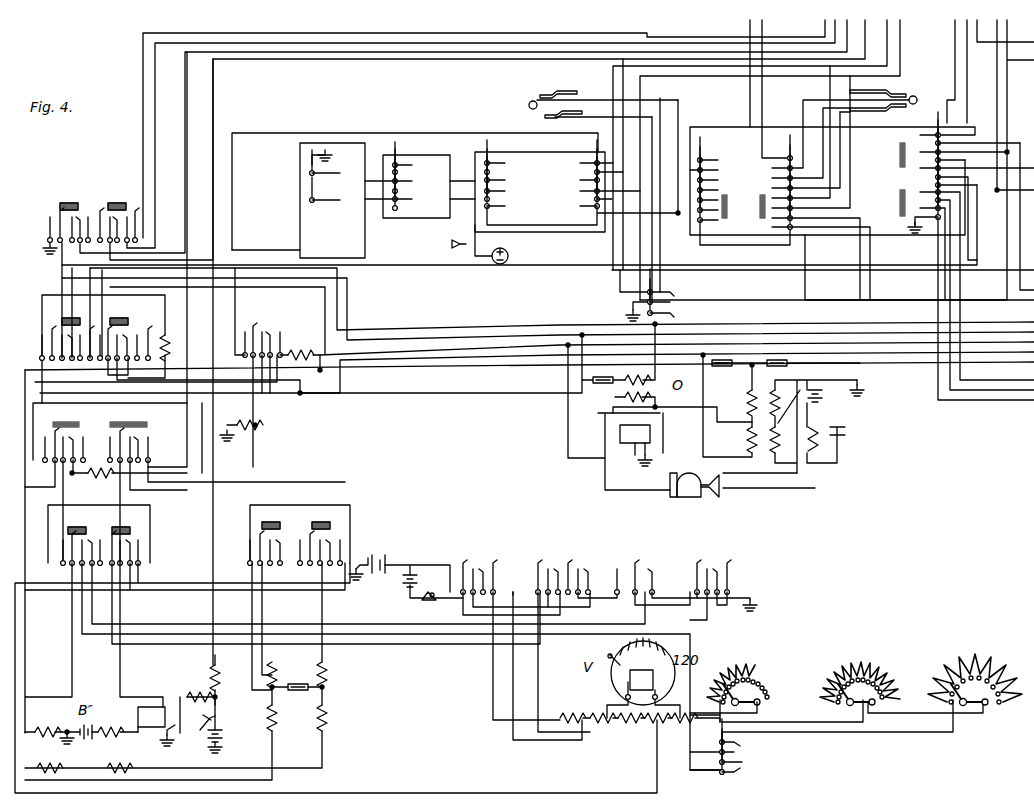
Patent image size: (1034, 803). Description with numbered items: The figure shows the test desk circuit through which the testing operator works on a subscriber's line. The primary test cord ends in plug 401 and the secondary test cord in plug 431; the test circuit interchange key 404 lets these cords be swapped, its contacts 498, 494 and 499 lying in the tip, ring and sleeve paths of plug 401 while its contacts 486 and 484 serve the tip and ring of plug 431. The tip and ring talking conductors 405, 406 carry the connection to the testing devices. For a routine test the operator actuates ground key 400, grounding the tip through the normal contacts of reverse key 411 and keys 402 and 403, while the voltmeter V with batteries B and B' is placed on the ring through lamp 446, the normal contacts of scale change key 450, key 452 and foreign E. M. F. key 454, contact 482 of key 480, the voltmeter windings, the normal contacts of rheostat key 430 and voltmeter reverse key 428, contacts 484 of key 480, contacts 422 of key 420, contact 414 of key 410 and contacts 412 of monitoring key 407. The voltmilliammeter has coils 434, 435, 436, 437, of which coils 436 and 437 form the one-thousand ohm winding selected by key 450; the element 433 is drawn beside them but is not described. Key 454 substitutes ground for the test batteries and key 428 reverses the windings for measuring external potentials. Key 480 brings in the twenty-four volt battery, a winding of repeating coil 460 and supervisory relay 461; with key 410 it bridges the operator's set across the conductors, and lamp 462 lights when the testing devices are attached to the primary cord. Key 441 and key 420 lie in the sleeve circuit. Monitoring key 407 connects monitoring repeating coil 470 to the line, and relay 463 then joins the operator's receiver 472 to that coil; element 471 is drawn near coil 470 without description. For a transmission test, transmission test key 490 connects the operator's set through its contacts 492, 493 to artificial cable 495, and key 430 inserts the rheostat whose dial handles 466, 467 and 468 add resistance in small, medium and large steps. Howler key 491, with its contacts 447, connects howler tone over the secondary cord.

The ground key 400 is at (332, 200).
The primary test plug 401 is at (542, 96).
The key 402 is at (577, 212).
The key 403 is at (549, 186).
The test circuit interchange key 404 is at (785, 151).
The tip conductor 405 is at (778, 73).
The ring conductor 406 is at (745, 78).
The monitoring key 407 is at (86, 192).
The key 410 is at (105, 334).
The reverse key 411 is at (420, 180).
The contacts of key 407 412 is at (114, 204).
The contact of key 410 414 is at (115, 310).
The key 420 is at (216, 492).
The contacts of key 420 422 is at (84, 428).
The voltmeter reverse key 428 is at (705, 550).
The rheostat key 430 is at (756, 762).
The secondary test plug 431 is at (910, 95).
The resistor 433 is at (569, 710).
The voltmilliammeter coil 434 is at (598, 723).
The voltmilliammeter coil 435 is at (627, 723).
The voltmilliammeter coil 436 is at (654, 722).
The voltmilliammeter coil 437 is at (683, 722).
The key 441 is at (255, 320).
The lamp 446 is at (406, 581).
The contacts of key 491 447 is at (900, 212).
The scale change key 450 is at (482, 550).
The key 452 is at (562, 550).
The foreign E. M. F. key 454 is at (635, 550).
The repeating coil 460 is at (52, 743).
The supervisory relay 461 is at (140, 712).
The lamp 462 is at (191, 707).
The relay 463 is at (635, 458).
The dial handle 466 is at (729, 688).
The dial handle 467 is at (901, 687).
The third dial handle 468 is at (975, 680).
The monitoring repeating coil 470 is at (620, 391).
The fuse 471 is at (586, 388).
The operator's receiver 472 is at (676, 472).
The key 480 is at (88, 530).
The contact of key 480 482 is at (72, 565).
The contacts 484 is at (120, 547).
The contacts of key 404 486 is at (778, 142).
The transmission test key 490 is at (293, 520).
The howler key 491 is at (898, 183).
The contacts of key 490 492 is at (287, 626).
The contacts of key 490 493 is at (312, 520).
The contacts of key 404 494 is at (720, 184).
The artificial cable 495 is at (176, 715).
The contacts of key 404 498 is at (705, 158).
The contacts of key 404 499 is at (744, 216).